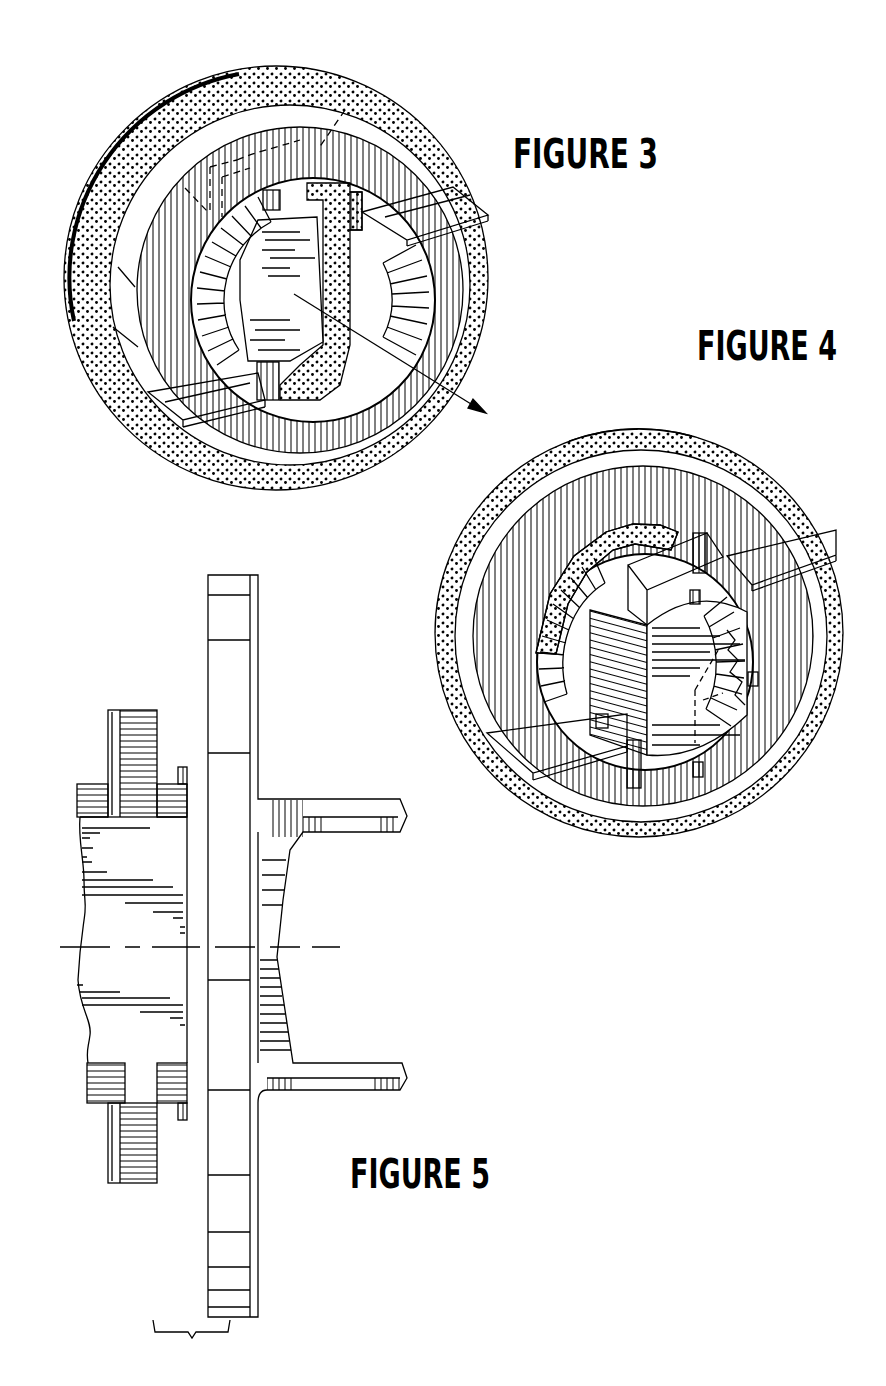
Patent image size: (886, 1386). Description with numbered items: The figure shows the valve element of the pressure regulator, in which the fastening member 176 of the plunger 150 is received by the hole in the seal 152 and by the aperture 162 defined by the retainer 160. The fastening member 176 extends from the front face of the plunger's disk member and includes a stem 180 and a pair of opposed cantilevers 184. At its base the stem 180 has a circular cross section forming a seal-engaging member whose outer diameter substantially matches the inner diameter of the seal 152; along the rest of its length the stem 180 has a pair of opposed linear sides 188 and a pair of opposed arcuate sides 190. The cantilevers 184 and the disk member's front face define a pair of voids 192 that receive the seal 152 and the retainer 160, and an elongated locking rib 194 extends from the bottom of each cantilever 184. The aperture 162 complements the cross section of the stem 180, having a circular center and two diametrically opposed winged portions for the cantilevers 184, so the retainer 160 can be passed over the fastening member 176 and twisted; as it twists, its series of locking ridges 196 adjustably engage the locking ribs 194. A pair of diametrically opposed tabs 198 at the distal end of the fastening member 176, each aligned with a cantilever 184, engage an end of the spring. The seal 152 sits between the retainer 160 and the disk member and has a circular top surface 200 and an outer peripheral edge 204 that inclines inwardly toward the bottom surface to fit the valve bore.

In FIG. 5, the plunger 150 is at (95, 907).
In FIG. 3, the seal 152 is at (303, 92).
In FIG. 4, the seal 152 is at (767, 473).
In FIG. 3, the retainer 160 is at (395, 162).
In FIG. 4, the retainer 160 is at (760, 513).
In FIG. 5, the retainer 160 is at (243, 1250).
In FIG. 3, the aperture 162 is at (328, 403).
In FIG. 4, the aperture 162 is at (700, 530).
In FIG. 3, the fastening member 176 is at (300, 298).
In FIG. 4, the fastening member 176 is at (693, 689).
In FIG. 5, the fastening member 176 is at (107, 1023).
In FIG. 3, the stem 180 is at (390, 250).
In FIG. 4, the stem 180 is at (747, 717).
In FIG. 5, the stem 180 is at (98, 1108).
In FIG. 3, the cantilevers 184 is at (348, 105).
In FIG. 4, the cantilevers 184 is at (707, 533).
In FIG. 5, the cantilevers 184 is at (140, 723).
In FIG. 4, the linear sides 188 is at (760, 677).
In FIG. 4, the arcuate sides 190 is at (625, 523).
In FIG. 5, the voids 192 is at (83, 783).
In FIG. 5, the locking rib 194 is at (107, 723).
In FIG. 3, the locking ridges 196 is at (430, 302).
In FIG. 4, the locking ridges 196 is at (545, 612).
In FIG. 5, the locking ridges 196 is at (277, 973).
In FIG. 3, the tabs 198 is at (292, 188).
In FIG. 4, the tabs 198 is at (690, 587).
In FIG. 5, the tabs 198 is at (180, 767).
In FIG. 3, the top surface 200 is at (213, 97).
In FIG. 4, the top surface 200 is at (678, 430).
In FIG. 3, the outer peripheral edge 204 is at (133, 133).
In FIG. 4, the outer peripheral edge 204 is at (540, 457).